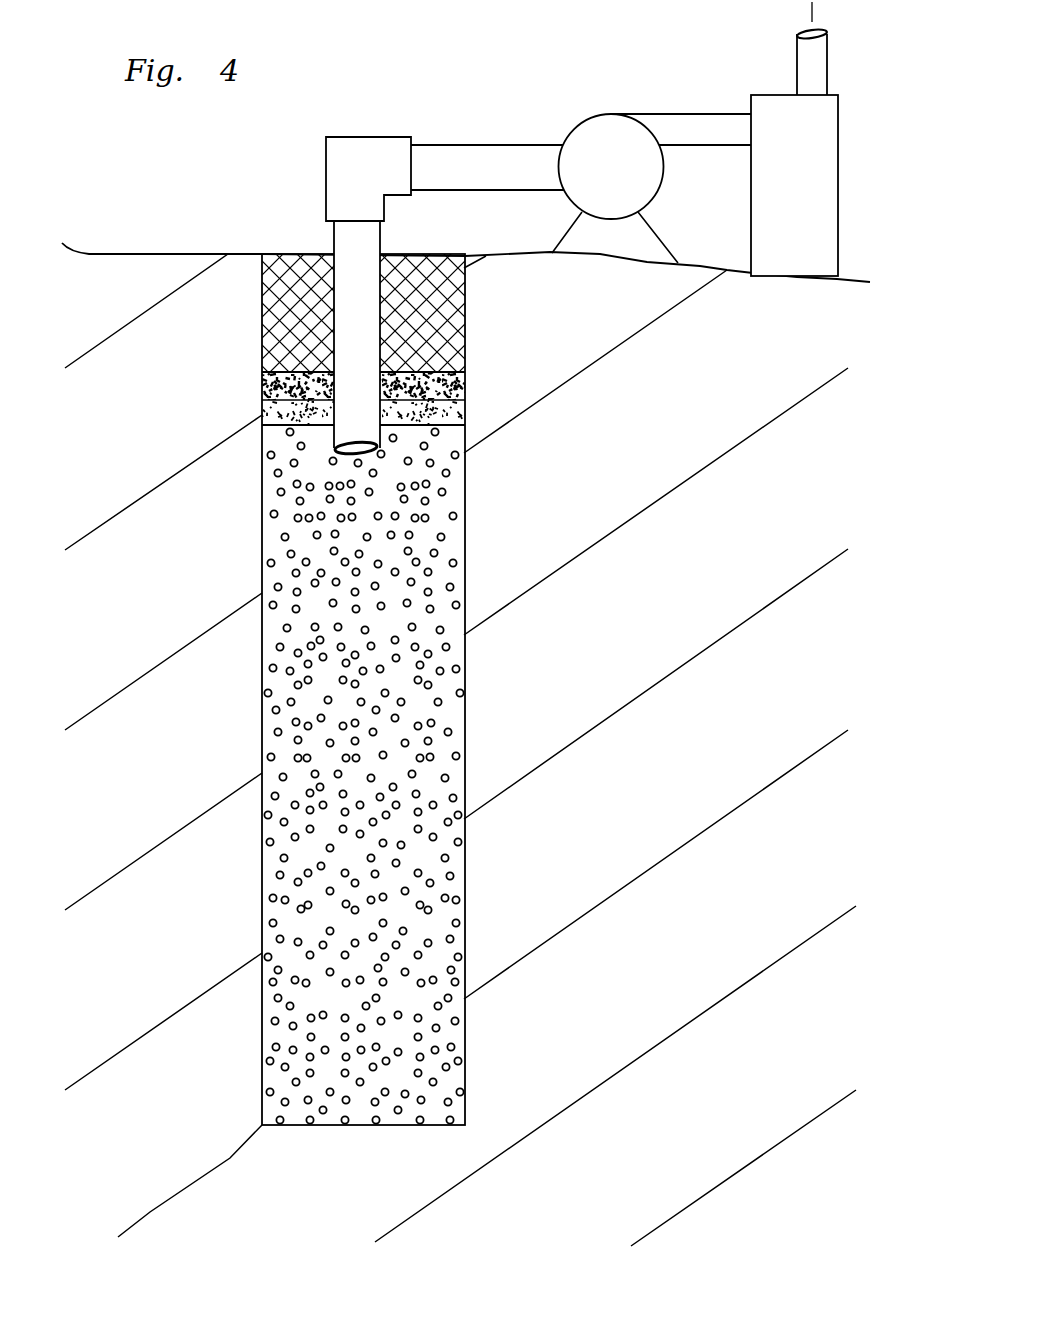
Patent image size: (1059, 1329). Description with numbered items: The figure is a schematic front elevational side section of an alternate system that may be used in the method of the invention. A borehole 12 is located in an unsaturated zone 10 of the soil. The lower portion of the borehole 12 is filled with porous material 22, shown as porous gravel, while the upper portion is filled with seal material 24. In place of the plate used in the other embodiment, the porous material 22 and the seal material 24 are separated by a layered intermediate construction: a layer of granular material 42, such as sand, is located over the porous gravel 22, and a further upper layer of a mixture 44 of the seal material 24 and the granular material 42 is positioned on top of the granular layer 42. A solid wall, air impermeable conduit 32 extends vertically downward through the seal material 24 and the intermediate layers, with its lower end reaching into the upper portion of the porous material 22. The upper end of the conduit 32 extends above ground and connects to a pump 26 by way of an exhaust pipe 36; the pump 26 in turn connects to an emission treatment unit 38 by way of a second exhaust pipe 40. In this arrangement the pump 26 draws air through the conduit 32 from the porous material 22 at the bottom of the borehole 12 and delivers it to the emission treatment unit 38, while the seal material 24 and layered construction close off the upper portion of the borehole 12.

The unsaturated zone 10 is at (203, 760).
The borehole 12 is at (472, 656).
The porous material 22 is at (292, 885).
The seal material 24 is at (298, 330).
The pump 26 is at (601, 113).
The conduit 32 is at (327, 237).
The exhaust pipe 36 is at (464, 143).
The emission treatment unit 38 is at (818, 187).
The exhaust pipe 40 is at (720, 114).
The granular material 42 is at (464, 413).
The mixture 44 is at (465, 383).